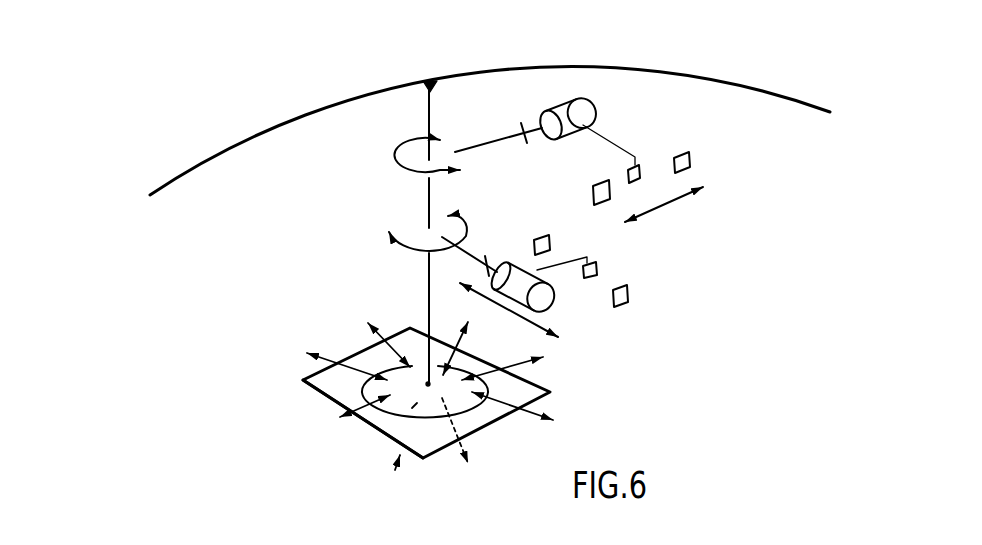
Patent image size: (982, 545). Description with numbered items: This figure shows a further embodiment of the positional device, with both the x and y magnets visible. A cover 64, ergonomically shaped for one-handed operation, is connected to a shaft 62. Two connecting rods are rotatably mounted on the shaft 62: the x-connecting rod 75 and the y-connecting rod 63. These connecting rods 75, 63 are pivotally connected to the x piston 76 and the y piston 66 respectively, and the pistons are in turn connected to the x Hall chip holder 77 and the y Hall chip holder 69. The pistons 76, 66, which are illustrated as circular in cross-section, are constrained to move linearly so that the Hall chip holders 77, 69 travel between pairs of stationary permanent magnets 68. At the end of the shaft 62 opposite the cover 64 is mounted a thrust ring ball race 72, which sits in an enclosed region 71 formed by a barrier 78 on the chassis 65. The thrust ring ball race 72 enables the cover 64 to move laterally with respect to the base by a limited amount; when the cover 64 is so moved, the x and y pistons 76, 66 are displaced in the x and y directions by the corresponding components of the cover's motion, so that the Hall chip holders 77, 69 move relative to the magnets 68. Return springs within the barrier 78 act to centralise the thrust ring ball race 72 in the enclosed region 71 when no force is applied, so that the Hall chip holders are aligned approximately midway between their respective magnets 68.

The shaft 62 is at (425, 193).
The y-connecting rod 63 is at (497, 137).
The cover 64 is at (256, 131).
The chassis 65 is at (148, 466).
The y piston 66 is at (565, 103).
The permanent magnets 68 is at (698, 163).
The y Hall chip holder 69 is at (646, 172).
The enclosed region 71 is at (392, 424).
The thrust ring ball race 72 is at (410, 392).
The x-connecting rod 75 is at (472, 260).
The x piston 76 is at (561, 311).
The x Hall chip holder 77 is at (608, 267).
The barrier 78 is at (556, 398).